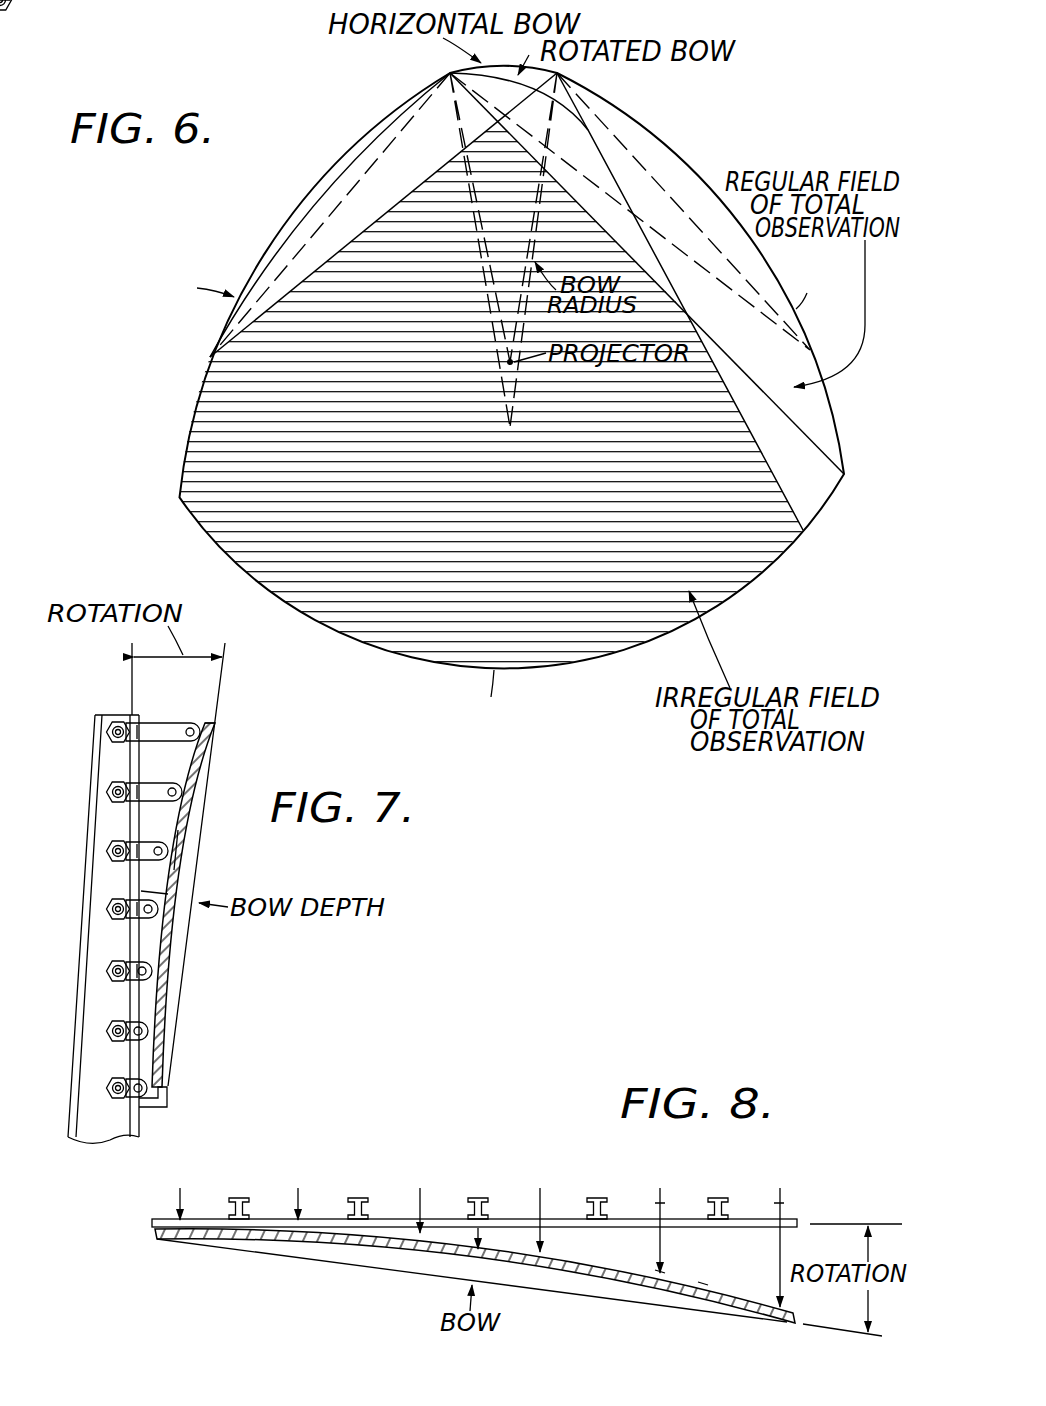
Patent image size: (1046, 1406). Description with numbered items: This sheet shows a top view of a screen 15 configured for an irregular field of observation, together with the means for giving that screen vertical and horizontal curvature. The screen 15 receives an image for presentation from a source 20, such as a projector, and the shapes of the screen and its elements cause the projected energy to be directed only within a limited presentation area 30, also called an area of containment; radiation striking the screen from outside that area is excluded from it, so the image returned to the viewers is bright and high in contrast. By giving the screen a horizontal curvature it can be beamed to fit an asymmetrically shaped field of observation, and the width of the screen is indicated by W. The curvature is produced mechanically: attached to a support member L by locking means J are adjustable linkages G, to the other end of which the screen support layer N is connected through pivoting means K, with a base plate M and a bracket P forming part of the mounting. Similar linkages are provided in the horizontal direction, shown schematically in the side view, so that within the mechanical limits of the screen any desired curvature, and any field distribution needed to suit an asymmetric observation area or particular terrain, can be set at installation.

In FIG. 6, the screen 15 is at (449, 71).
In FIG. 7, the screen 15 is at (173, 934).
In FIG. 8, the screen 15 is at (620, 1283).
In FIG. 6, the source 20 is at (507, 363).
In FIG. 6, the presentation area 30 is at (557, 527).
In FIG. 6, the bow width W is at (496, 495).
In FIG. 7, the adjustable linkages G is at (148, 719).
In FIG. 8, the adjustable linkages G is at (658, 1203).
In FIG. 7, the locking means J is at (107, 858).
In FIG. 8, the locking means J is at (542, 1218).
In FIG. 7, the pivoting means K is at (199, 722).
In FIG. 8, the pivoting means K is at (660, 1271).
In FIG. 7, the screen support layer N is at (178, 833).
In FIG. 8, the screen support layer N is at (703, 1283).
In FIG. 7, the support member L is at (102, 1126).
In FIG. 8, the support member L is at (237, 1196).
In FIG. 8, the mounting plate M is at (390, 1218).
In FIG. 7, the bottom bracket P is at (168, 1100).